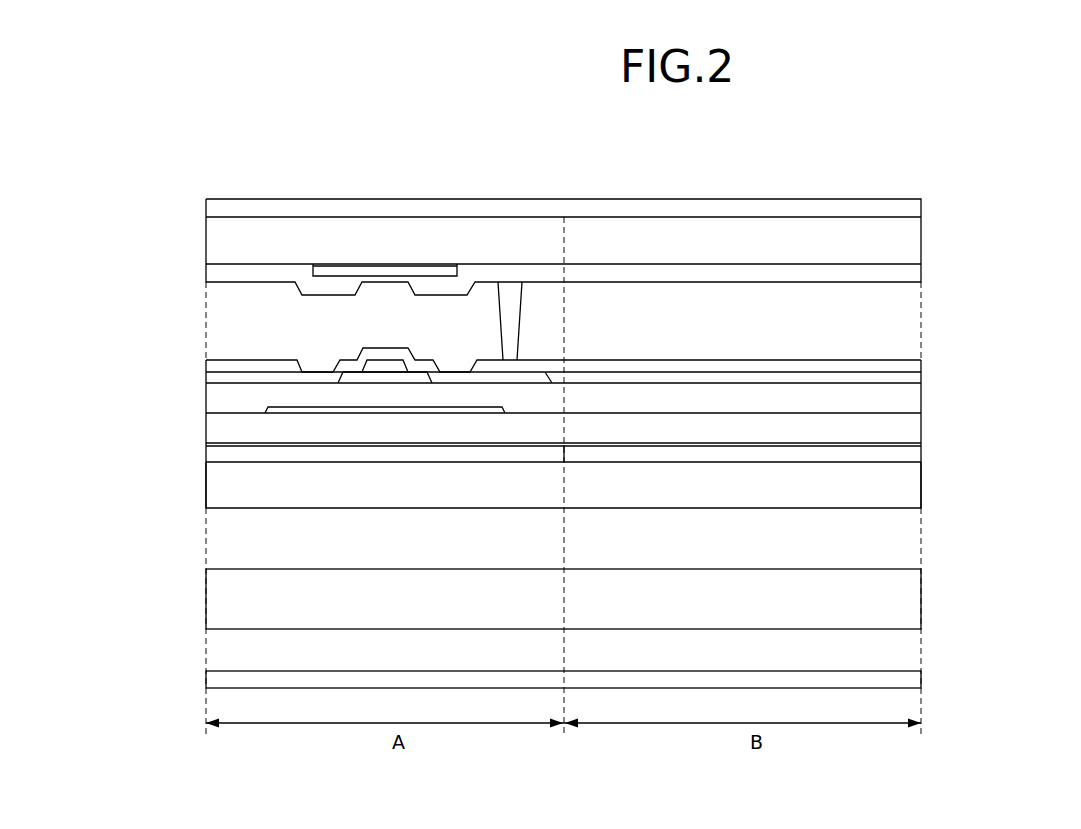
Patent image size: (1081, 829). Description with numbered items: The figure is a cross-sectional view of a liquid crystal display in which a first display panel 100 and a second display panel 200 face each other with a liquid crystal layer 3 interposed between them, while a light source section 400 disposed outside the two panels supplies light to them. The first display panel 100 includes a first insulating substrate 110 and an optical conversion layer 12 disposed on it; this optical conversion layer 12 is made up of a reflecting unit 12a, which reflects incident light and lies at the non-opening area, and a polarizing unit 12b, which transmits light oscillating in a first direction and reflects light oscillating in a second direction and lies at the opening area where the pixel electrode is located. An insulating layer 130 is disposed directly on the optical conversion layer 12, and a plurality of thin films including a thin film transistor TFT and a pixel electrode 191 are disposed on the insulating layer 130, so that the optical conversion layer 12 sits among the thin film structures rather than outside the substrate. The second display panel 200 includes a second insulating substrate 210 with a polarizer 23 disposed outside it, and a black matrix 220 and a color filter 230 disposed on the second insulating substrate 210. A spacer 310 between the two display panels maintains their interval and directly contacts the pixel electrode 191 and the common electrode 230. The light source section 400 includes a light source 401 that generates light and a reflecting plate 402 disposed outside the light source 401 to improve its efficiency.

The polarizer 23 is at (908, 209).
The second insulating substrate 210 is at (908, 245).
The color filter 230 is at (908, 274).
The black matrix 220 is at (383, 272).
The second display panel 200 is at (628, 222).
The liquid crystal layer 3 is at (618, 321).
The spacer 310 is at (515, 316).
The thin film transistor TFT is at (318, 358).
The first display panel 100 is at (598, 432).
The pixel electrode 191 is at (742, 367).
The insulating layer 130 is at (220, 428).
The optical conversion layer 12 is at (589, 501).
The reflecting unit 12a is at (385, 450).
The polarizing unit 12b is at (712, 455).
The first insulating substrate 110 is at (594, 485).
The light source section 400 is at (628, 629).
The light source 401 is at (908, 601).
The reflecting plate 402 is at (594, 680).